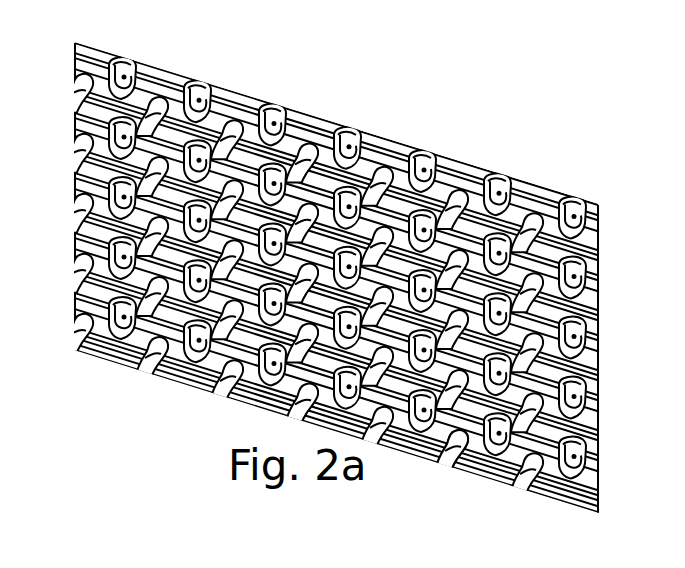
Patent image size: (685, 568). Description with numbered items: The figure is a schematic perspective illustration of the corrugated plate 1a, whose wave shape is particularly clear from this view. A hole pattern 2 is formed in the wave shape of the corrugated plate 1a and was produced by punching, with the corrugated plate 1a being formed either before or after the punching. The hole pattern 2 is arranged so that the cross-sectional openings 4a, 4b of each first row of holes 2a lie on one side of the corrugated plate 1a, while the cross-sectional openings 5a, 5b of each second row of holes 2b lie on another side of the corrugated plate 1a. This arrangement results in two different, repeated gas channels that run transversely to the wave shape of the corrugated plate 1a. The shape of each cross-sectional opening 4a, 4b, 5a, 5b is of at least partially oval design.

The corrugated plate 1a is at (492, 84).
The hole pattern 2 is at (343, 135).
The first row of holes 2a is at (576, 214).
The second row of holes 2b is at (456, 498).
The cross-sectional opening 4a is at (568, 466).
The cross-sectional opening 4b is at (600, 456).
The cross-sectional opening 5a is at (578, 385).
The cross-sectional opening 5b is at (556, 322).